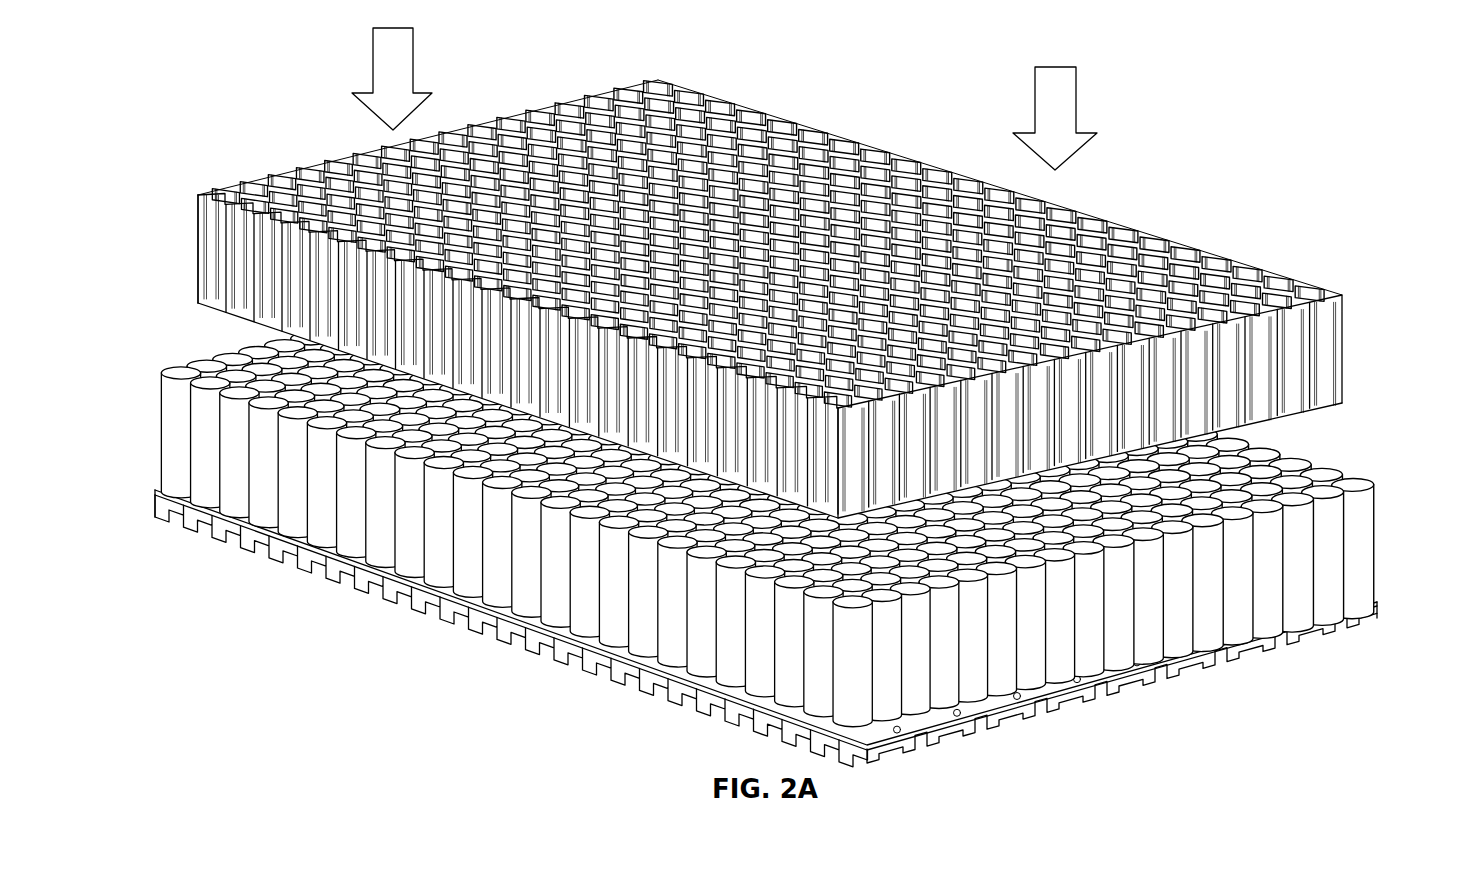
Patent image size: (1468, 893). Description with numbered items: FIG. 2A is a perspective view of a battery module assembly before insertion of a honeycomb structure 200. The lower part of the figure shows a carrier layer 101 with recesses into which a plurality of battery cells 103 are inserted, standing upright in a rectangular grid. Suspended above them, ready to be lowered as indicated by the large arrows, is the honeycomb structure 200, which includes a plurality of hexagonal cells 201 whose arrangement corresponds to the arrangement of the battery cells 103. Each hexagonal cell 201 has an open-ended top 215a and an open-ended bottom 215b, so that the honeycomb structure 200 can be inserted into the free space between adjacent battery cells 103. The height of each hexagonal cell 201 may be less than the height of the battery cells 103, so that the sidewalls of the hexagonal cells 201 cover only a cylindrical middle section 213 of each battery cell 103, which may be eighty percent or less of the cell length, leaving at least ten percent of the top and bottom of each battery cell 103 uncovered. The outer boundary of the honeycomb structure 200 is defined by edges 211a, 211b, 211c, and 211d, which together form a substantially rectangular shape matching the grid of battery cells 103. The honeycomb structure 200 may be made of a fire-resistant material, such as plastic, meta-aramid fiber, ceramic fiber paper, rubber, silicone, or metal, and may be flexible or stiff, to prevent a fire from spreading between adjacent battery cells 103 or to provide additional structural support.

The honeycomb structure 200 is at (766, 397).
The hexagonal cell 201 is at (766, 291).
The edge 211a is at (1353, 352).
The edge 211b is at (830, 124).
The edge 211c is at (530, 103).
The edge 211d is at (188, 268).
The open-ended top 215a is at (1275, 302).
The open-ended bottom 215b is at (1283, 425).
The battery cell 103 is at (1366, 491).
The cylindrical middle section 213 is at (803, 481).
The carrier layer 101 is at (1148, 690).